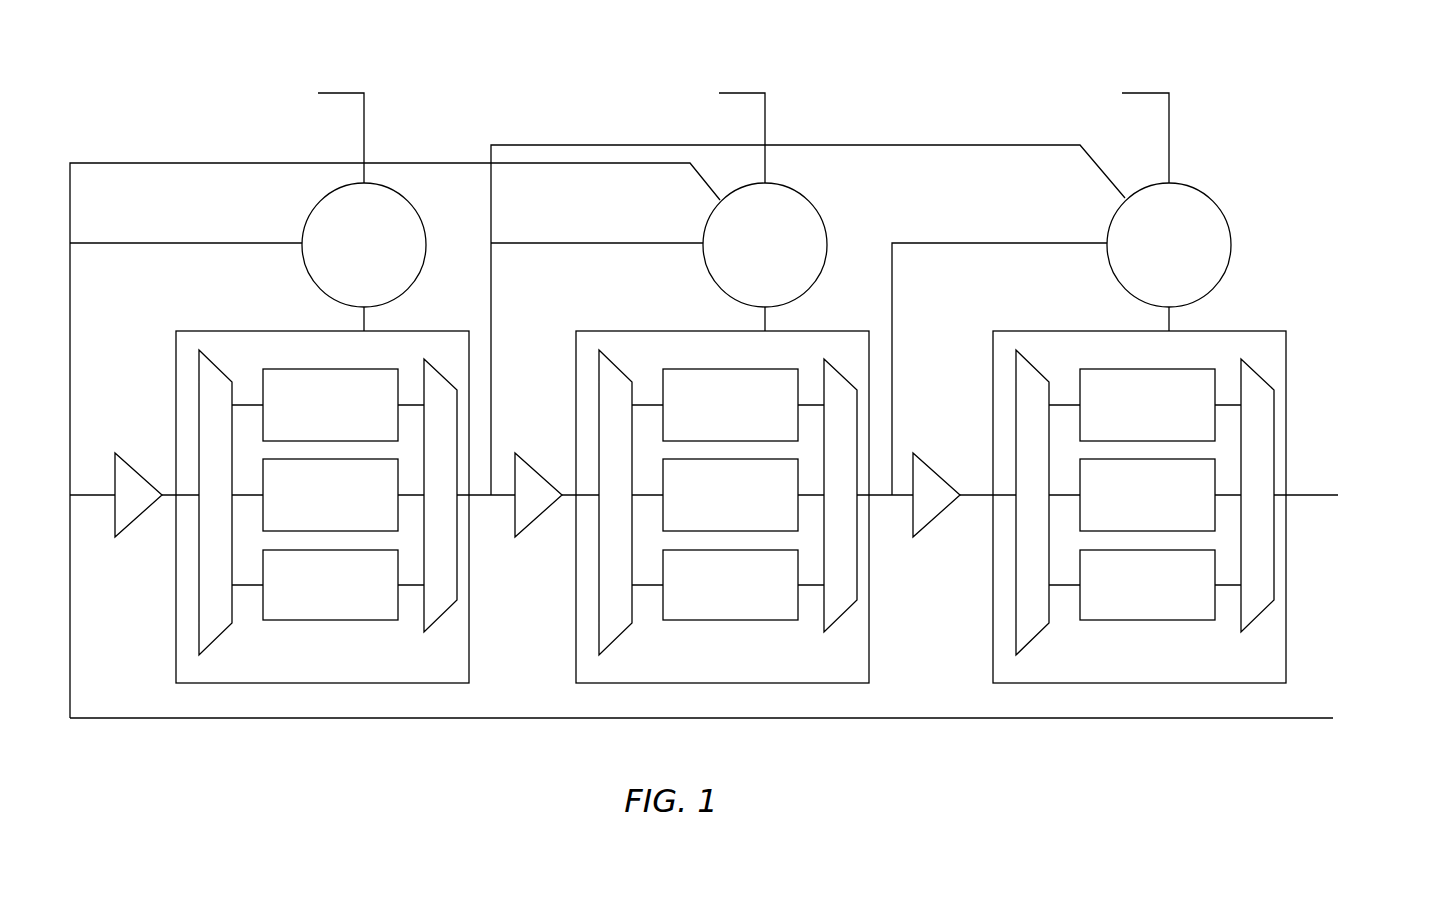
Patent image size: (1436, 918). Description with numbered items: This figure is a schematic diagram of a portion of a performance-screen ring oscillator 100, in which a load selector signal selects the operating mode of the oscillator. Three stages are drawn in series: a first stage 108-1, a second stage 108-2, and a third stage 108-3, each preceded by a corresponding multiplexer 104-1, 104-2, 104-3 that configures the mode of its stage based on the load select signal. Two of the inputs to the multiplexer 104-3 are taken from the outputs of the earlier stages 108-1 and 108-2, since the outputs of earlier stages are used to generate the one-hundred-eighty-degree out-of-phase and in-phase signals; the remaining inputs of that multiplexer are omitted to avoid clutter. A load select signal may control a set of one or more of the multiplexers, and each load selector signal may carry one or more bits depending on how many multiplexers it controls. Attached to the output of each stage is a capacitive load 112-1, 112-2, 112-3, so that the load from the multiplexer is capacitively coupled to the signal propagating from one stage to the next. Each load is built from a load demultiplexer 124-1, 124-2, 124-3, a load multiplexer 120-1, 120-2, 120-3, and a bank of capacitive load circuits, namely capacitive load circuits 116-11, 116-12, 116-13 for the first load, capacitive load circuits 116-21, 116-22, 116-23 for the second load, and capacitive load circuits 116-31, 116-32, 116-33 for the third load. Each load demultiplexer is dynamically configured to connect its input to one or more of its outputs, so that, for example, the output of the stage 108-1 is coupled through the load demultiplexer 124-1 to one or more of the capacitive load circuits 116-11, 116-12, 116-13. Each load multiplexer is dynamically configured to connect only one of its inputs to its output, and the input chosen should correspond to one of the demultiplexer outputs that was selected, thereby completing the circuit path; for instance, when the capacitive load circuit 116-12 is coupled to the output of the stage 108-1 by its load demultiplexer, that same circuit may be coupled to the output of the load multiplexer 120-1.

The performance-screen ring oscillator 100 is at (1358, 130).
The multiplexer 104-1 is at (335, 272).
The multiplexer 104-2 is at (736, 272).
The multiplexer 104-3 is at (1140, 272).
The stage 108-1 is at (132, 461).
The stage 108-2 is at (532, 461).
The stage 108-3 is at (931, 461).
The load 112-1 is at (338, 676).
The load 112-2 is at (738, 676).
The load 112-3 is at (1155, 676).
The capacitive load circuit 116-11 is at (298, 432).
The capacitive load circuit 116-12 is at (298, 522).
The capacitive load circuit 116-13 is at (298, 612).
The capacitive load circuit 116-21 is at (698, 432).
The capacitive load circuit 116-22 is at (698, 522).
The capacitive load circuit 116-23 is at (698, 612).
The capacitive load circuit 116-31 is at (1115, 432).
The capacitive load circuit 116-32 is at (1115, 522).
The capacitive load circuit 116-33 is at (1115, 612).
The load multiplexer 120-1 is at (424, 362).
The load multiplexer 120-2 is at (824, 362).
The load multiplexer 120-3 is at (1241, 362).
The load demultiplexer 124-1 is at (204, 352).
The load demultiplexer 124-2 is at (604, 352).
The load demultiplexer 124-3 is at (1021, 352).